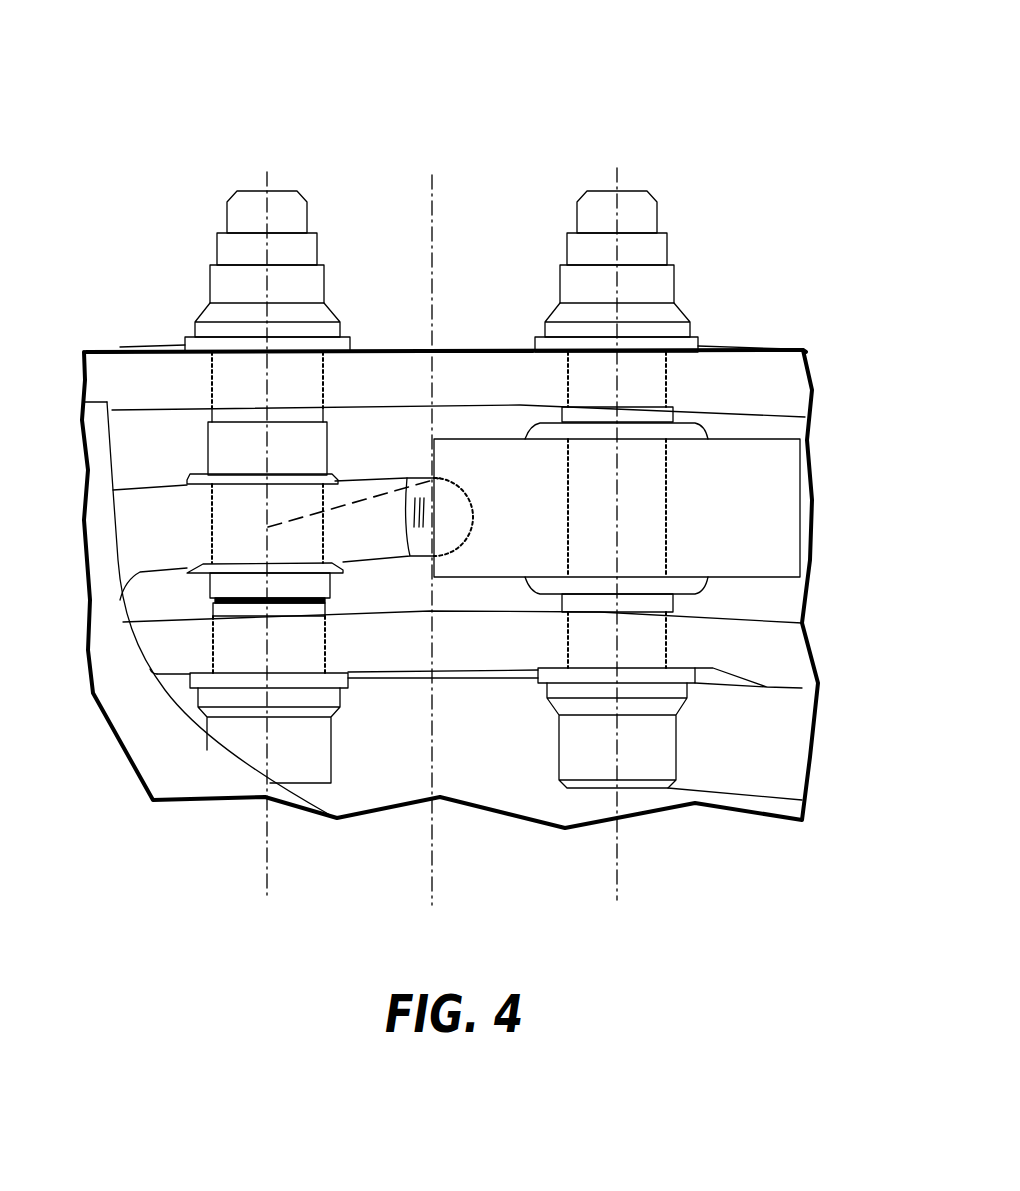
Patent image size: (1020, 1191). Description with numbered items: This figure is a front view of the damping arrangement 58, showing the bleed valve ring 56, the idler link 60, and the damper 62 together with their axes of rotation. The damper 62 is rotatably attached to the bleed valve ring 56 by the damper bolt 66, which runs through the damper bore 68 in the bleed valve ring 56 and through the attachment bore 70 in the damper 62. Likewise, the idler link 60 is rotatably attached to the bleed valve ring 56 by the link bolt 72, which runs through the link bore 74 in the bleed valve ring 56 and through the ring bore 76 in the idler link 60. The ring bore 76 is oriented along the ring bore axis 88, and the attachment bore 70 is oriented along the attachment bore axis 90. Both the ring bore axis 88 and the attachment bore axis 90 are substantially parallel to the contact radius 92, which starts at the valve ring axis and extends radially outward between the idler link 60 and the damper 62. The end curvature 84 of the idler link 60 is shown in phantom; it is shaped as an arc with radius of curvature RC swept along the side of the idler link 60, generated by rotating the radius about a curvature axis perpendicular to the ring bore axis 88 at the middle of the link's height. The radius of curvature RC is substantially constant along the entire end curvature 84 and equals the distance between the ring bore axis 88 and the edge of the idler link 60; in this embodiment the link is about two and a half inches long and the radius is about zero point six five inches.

The bleed valve ring 56 is at (783, 368).
The damping arrangement 58 is at (610, 78).
The idler link 60 is at (146, 472).
The damper 62 is at (815, 528).
The damper bolt 66 is at (640, 218).
The damper bore 68 is at (666, 386).
The attachment bore 70 is at (666, 488).
The link bolt 72 is at (292, 218).
The link bore 74 is at (214, 377).
The ring bore 76 is at (214, 524).
The end curvature 84 is at (430, 477).
The ring bore axis 88 is at (268, 172).
The attachment bore axis 90 is at (618, 175).
The contact radius 92 is at (433, 175).